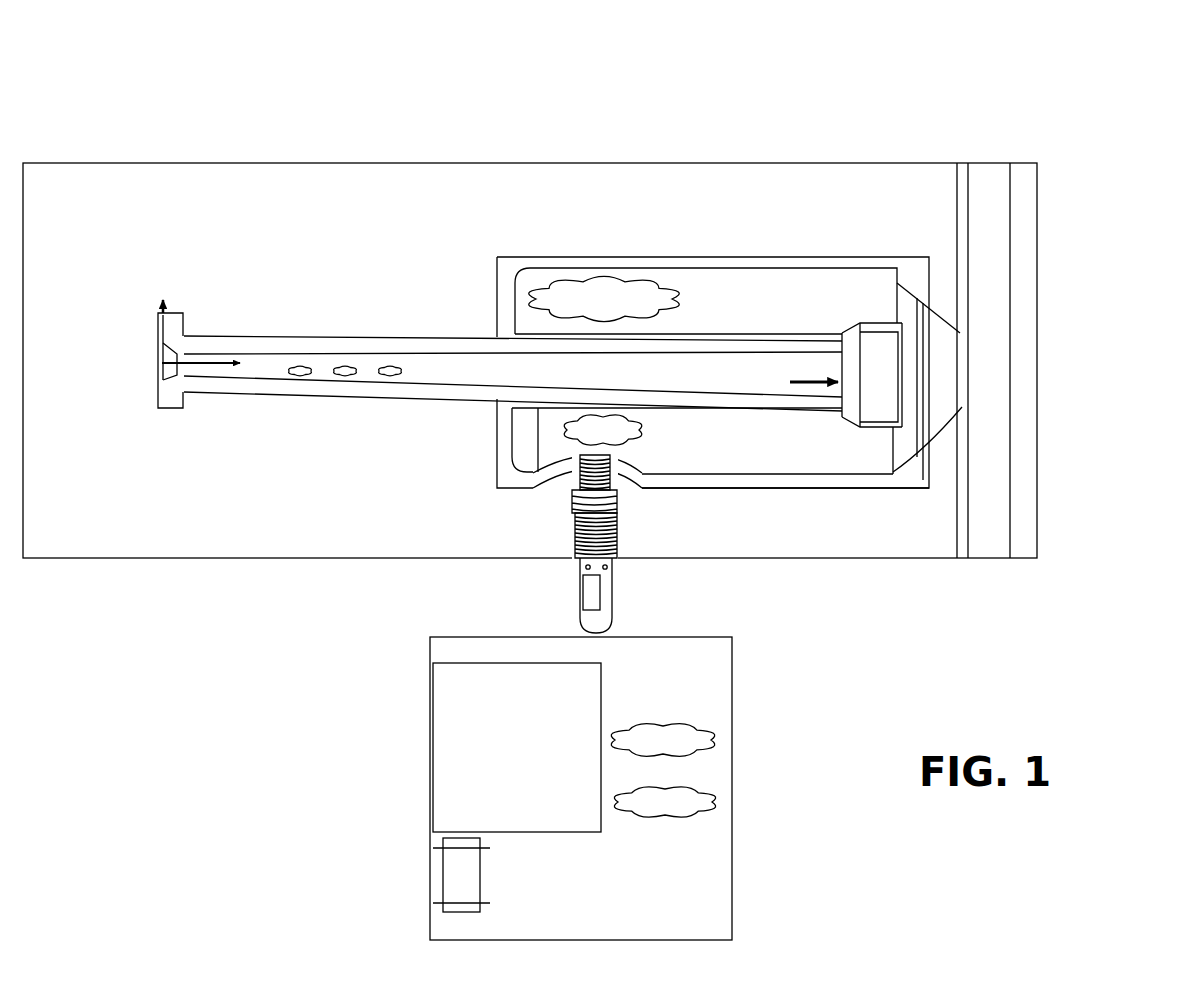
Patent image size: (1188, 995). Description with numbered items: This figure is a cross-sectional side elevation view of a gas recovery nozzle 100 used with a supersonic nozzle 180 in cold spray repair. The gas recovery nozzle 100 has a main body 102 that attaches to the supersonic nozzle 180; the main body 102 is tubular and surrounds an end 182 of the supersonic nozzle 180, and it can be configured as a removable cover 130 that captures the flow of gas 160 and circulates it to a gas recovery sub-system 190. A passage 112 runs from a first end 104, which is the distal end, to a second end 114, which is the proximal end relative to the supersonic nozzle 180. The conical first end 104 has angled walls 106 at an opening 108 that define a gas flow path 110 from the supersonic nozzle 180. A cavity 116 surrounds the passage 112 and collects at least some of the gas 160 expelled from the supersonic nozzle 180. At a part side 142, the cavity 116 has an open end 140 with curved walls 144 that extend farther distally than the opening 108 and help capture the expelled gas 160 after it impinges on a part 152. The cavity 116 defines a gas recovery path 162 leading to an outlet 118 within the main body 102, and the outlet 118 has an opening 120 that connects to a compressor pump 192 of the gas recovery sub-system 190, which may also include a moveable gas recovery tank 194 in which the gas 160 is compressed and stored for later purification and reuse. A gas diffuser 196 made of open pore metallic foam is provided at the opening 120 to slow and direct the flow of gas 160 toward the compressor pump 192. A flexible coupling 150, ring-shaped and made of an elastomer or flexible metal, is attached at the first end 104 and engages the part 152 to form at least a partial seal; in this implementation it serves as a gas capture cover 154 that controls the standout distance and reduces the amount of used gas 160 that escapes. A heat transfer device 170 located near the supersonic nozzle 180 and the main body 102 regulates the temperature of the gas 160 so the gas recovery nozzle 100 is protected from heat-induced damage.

The gas recovery nozzle 100 is at (1120, 97).
The main body 102 is at (478, 256).
The first end 104 is at (826, 400).
The angled walls 106 is at (837, 330).
The opening 108 is at (797, 382).
The gas flow path 110 is at (737, 377).
The passage 112 is at (558, 377).
The second end 114 is at (152, 383).
The cavity 116 is at (713, 333).
The outlet 118 is at (532, 497).
The opening 120 is at (630, 497).
The removable cover 130 is at (670, 245).
The open end 140 is at (916, 468).
The part side 142 is at (788, 493).
The curved walls 144 is at (900, 280).
The flexible coupling 150 is at (933, 461).
The part 152 is at (988, 158).
The gas capture cover 154 is at (953, 410).
The gas 160 is at (299, 393).
The gas recovery path 162 is at (835, 465).
The heat transfer device 170 is at (886, 410).
The supersonic nozzle 180 is at (198, 423).
The end 182 is at (474, 330).
The gas recovery sub-system 190 is at (690, 872).
The compressor pump 192 is at (500, 730).
The moveable gas recovery tank 194 is at (440, 864).
The gas diffuser 196 is at (568, 611).